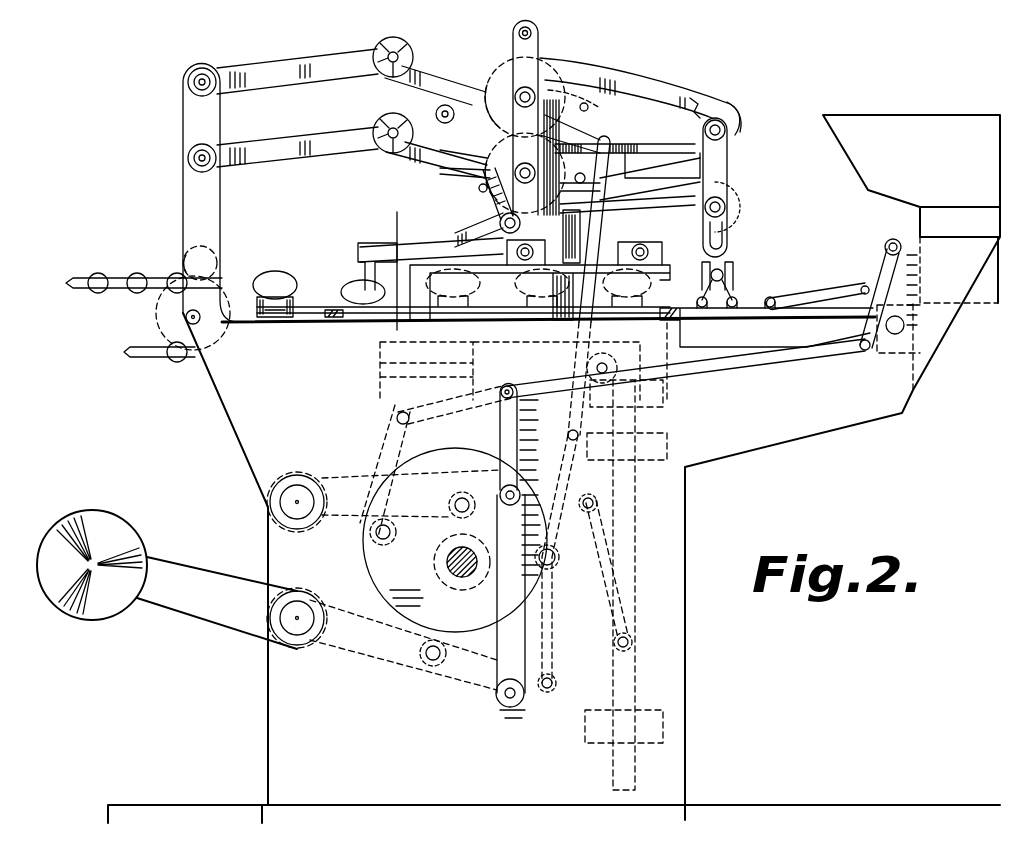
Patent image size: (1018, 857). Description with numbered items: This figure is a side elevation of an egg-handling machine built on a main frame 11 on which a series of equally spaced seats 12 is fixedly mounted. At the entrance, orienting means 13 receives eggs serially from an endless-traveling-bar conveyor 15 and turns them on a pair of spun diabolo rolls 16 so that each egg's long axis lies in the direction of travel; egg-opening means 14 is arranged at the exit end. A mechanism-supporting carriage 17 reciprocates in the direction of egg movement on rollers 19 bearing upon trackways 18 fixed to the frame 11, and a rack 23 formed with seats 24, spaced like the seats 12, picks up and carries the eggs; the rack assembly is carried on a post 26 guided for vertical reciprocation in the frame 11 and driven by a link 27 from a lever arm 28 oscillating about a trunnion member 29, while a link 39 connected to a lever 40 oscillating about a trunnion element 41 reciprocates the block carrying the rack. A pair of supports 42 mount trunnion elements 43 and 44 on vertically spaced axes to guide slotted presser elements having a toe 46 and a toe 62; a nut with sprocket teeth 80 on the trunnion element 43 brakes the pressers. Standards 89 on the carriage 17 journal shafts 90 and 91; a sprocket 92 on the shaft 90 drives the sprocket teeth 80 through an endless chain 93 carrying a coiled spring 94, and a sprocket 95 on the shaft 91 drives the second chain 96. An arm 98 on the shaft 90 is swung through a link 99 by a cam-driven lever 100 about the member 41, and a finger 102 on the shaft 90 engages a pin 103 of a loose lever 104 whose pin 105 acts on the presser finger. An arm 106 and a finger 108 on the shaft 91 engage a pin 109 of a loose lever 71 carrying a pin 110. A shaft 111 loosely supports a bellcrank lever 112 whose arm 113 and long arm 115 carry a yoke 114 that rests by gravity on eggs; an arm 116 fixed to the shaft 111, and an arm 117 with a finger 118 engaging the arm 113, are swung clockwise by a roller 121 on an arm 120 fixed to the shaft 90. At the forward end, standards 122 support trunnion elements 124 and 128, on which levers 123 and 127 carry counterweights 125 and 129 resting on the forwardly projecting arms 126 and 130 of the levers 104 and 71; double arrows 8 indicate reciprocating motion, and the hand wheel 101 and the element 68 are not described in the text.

The direction of movement arrows 8 is at (418, 339).
The main frame 11 is at (687, 650).
The seats 12 is at (472, 290).
The orienting means 13 is at (289, 258).
The egg-opening means 14 is at (754, 271).
The conveyor 15 is at (122, 289).
The rolls 16 is at (283, 318).
The mechanism-supporting carriage 17 is at (733, 82).
The trackways 18 is at (640, 287).
The rollers 19 is at (649, 252).
The rack 23 is at (472, 319).
The seats 24 is at (342, 331).
The post 26 is at (637, 590).
The link 27 is at (583, 561).
The lever arm 28 is at (432, 512).
The trunnion member 29 is at (295, 490).
The link 39 is at (633, 457).
The lever 40 is at (385, 450).
The trunnion element 41 is at (297, 632).
The supports 42 is at (728, 161).
The trunnion element 43 is at (732, 130).
The trunnion element 44 is at (735, 188).
The foot or toe 46 is at (738, 256).
The toe 62 is at (738, 279).
The pivot pin / plate 68 is at (733, 207).
The lever 71 is at (595, 206).
The sprocket teeth 80 is at (741, 111).
The standards 89 is at (535, 37).
The shaft 90 is at (545, 83).
The shaft 91 is at (525, 161).
The sprocket 92 is at (512, 70).
The endless chain 93 is at (640, 93).
The coiled spring 94 is at (645, 150).
The sprocket 95 is at (499, 151).
The endless chain 96 is at (635, 173).
The arm 98 is at (602, 132).
The link 99 is at (601, 226).
The lever 100 is at (405, 660).
The hand wheel 101 is at (125, 533).
The finger 102 is at (570, 134).
The pin 103 is at (590, 107).
The lever 104 is at (580, 96).
The pin 105 is at (693, 104).
The arm 106 is at (529, 227).
The finger 108 is at (554, 236).
The pin 109 is at (600, 188).
The pin 110 is at (651, 241).
The shaft 111 is at (508, 227).
The bellcrank lever 112 is at (515, 253).
The arm 113 is at (480, 168).
The yoke 114 is at (362, 275).
The arm 115 is at (431, 239).
The arm 116 is at (463, 147).
The arm 117 is at (480, 207).
The finger 118 is at (479, 188).
The arm 120 is at (512, 97).
The pin or roller 121 is at (436, 113).
The standards 122 is at (206, 196).
The lever 123 is at (290, 77).
The trunnion element 124 is at (190, 87).
The counterweight 125 is at (411, 51).
The arm 126 is at (437, 74).
The lever 127 is at (307, 143).
The trunnion element 128 is at (190, 162).
The counterweight 129 is at (391, 116).
The arm 130 is at (436, 157).